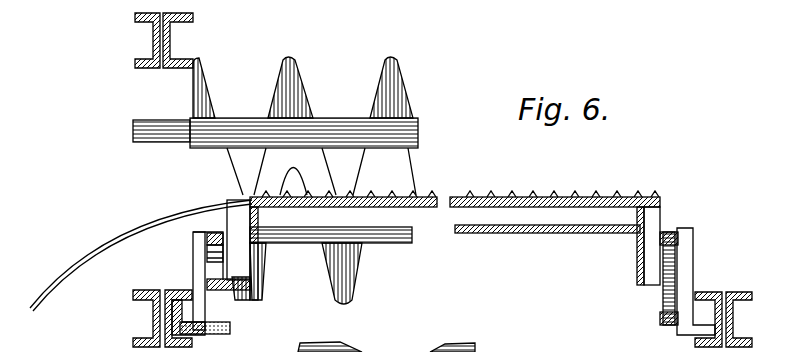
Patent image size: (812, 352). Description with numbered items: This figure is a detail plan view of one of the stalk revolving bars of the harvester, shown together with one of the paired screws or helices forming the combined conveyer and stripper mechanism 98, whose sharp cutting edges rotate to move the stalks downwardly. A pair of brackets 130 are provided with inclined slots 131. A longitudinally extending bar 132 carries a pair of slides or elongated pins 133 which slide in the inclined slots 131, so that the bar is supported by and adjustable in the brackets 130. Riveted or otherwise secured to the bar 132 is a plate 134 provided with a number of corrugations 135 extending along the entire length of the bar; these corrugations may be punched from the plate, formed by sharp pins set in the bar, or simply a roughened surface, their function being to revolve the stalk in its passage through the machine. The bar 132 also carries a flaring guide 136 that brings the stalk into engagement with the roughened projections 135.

The combined conveyer and stripper mechanism 98 is at (275, 180).
The brackets 130 is at (703, 251).
The inclined slots 131 is at (212, 306).
The longitudinally extending bar 132 is at (460, 226).
The slides or elongated pins 133 is at (224, 289).
The plate 134 is at (600, 194).
The corrugations 135 is at (510, 194).
The flaring guide 136 is at (141, 255).